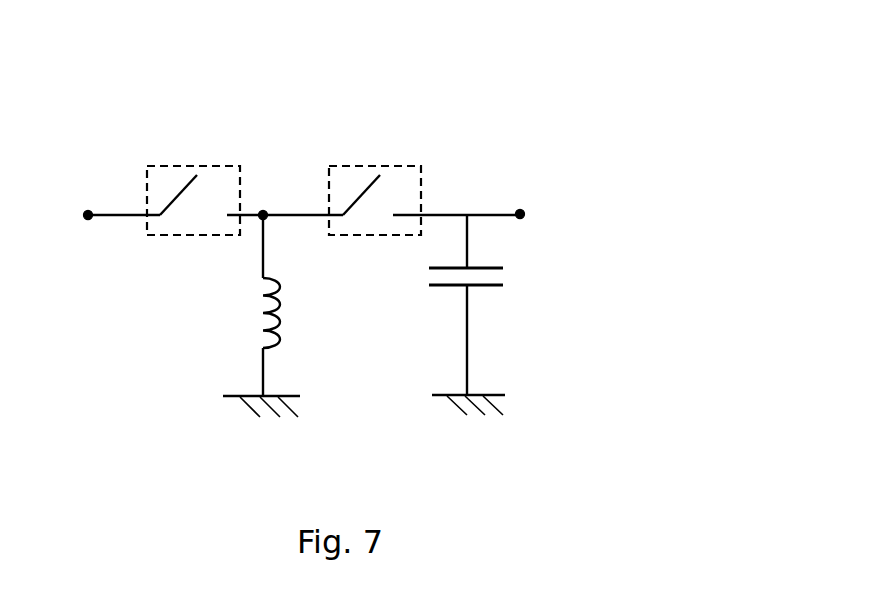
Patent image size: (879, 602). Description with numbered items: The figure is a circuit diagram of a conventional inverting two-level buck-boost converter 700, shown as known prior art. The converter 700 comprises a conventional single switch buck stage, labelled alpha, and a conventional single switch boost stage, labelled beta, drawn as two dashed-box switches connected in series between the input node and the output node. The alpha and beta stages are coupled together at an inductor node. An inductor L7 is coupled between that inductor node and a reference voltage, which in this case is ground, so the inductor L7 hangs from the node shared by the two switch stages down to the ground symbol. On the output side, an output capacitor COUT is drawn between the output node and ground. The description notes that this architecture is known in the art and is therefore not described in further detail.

The inverting two-level buck-boost converter 700 is at (485, 134).
The inductor L7 is at (288, 305).
The output capacitor COUT is at (482, 305).